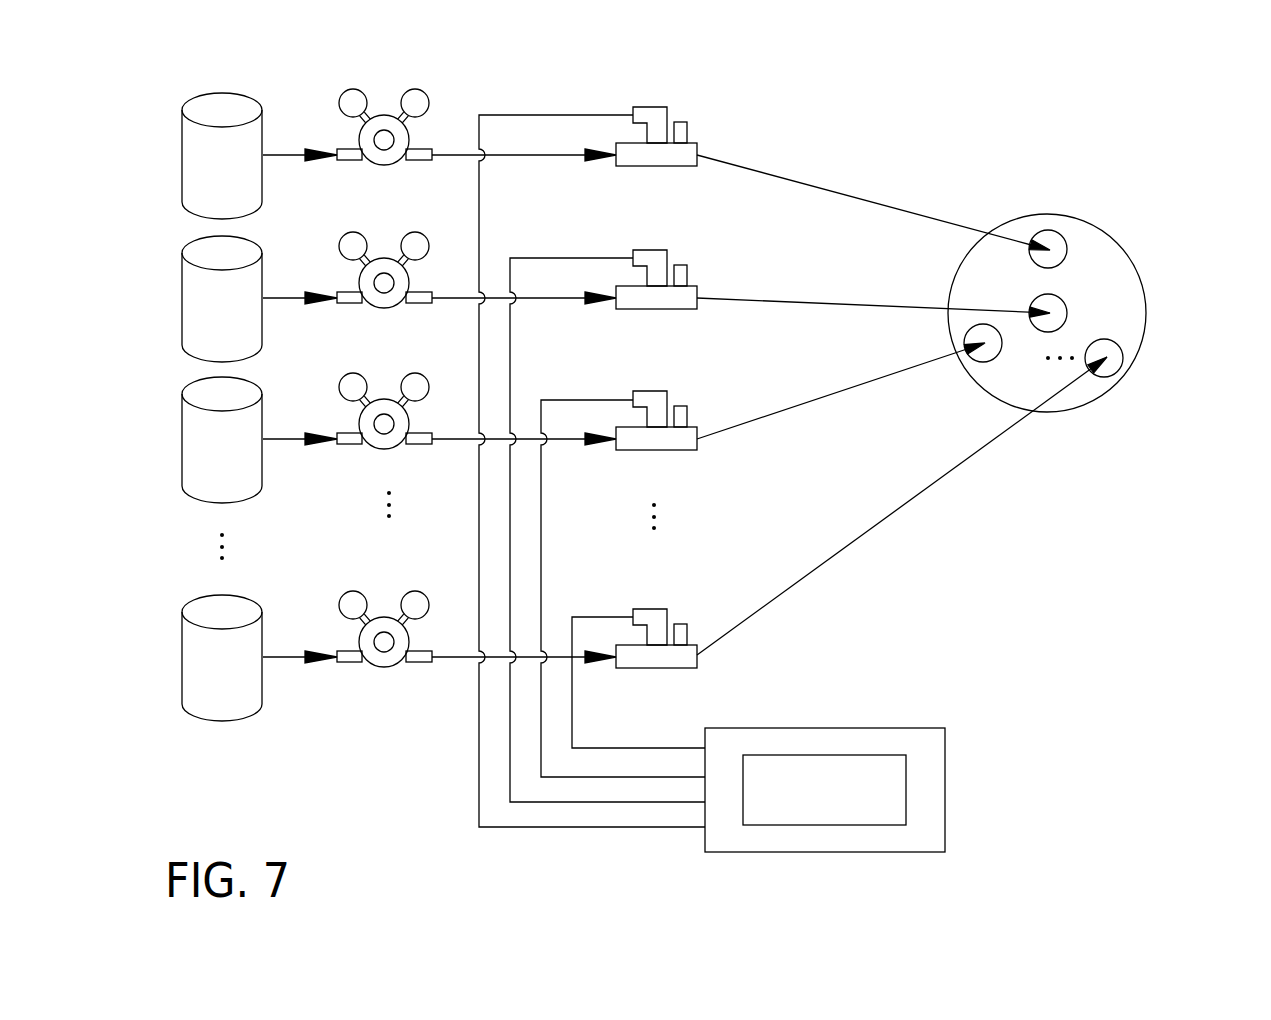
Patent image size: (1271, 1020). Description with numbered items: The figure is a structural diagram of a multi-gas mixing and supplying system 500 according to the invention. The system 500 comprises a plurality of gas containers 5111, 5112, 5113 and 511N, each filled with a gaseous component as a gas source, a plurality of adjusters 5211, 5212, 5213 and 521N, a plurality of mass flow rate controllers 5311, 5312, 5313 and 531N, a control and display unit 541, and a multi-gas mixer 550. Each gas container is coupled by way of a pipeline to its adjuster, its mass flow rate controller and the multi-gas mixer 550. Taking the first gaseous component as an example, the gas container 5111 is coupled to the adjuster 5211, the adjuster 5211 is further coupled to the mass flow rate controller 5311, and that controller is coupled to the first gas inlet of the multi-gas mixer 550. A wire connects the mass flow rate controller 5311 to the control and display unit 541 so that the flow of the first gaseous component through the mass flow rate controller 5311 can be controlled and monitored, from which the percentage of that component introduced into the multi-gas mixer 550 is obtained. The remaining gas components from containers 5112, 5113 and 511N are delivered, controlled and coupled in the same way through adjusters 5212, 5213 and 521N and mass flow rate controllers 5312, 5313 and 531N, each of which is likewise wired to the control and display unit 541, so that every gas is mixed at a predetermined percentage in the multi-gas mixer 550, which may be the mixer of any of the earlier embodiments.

The multi-gas mixing and supplying system 500 is at (118, 63).
The gas container 5111 is at (188, 162).
The gas container 5112 is at (172, 299).
The gas container 5113 is at (172, 440).
The gas container 511N is at (172, 658).
The adjuster 5211 is at (372, 165).
The adjuster 5212 is at (362, 269).
The adjuster 5213 is at (362, 410).
The adjuster 521N is at (362, 628).
The mass flow rate controller 5311 is at (686, 166).
The mass flow rate controller 5312 is at (649, 274).
The mass flow rate controller 5313 is at (649, 415).
The mass flow rate controller 531N is at (649, 633).
The control and display unit 541 is at (936, 792).
The multi-gas mixer 550 is at (1146, 313).